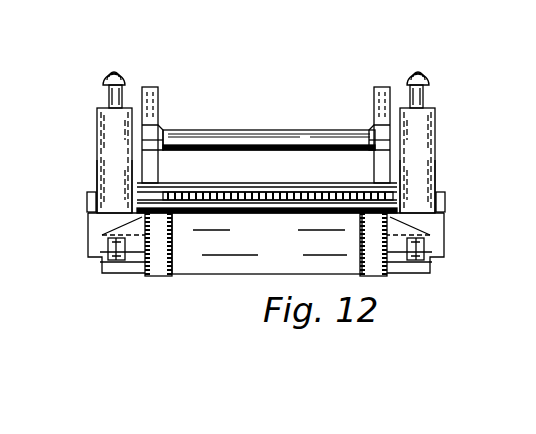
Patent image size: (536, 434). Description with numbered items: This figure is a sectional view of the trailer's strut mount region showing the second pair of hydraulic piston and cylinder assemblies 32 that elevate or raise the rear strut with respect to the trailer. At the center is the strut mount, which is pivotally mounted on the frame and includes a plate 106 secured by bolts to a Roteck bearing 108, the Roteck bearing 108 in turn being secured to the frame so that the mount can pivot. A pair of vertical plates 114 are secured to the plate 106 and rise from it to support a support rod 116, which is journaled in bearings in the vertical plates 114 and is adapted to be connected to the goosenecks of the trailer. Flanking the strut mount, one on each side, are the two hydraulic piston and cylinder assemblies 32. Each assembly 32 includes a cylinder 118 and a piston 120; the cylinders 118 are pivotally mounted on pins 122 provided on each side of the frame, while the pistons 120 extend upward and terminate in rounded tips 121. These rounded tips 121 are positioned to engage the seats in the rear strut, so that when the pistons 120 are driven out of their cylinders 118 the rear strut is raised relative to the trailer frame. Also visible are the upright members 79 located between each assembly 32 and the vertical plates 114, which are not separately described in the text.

The hydraulic piston and cylinder assembly 32 is at (93, 134).
The upright post 79 is at (149, 86).
The plate 106 is at (303, 168).
The Roteck bearing 108 is at (285, 201).
The vertical plate 114 is at (160, 126).
The support rod 116 is at (250, 130).
The cylinder 118 is at (97, 163).
The piston 120 is at (426, 93).
The rounded tip 121 is at (124, 72).
The pin 122 is at (86, 204).